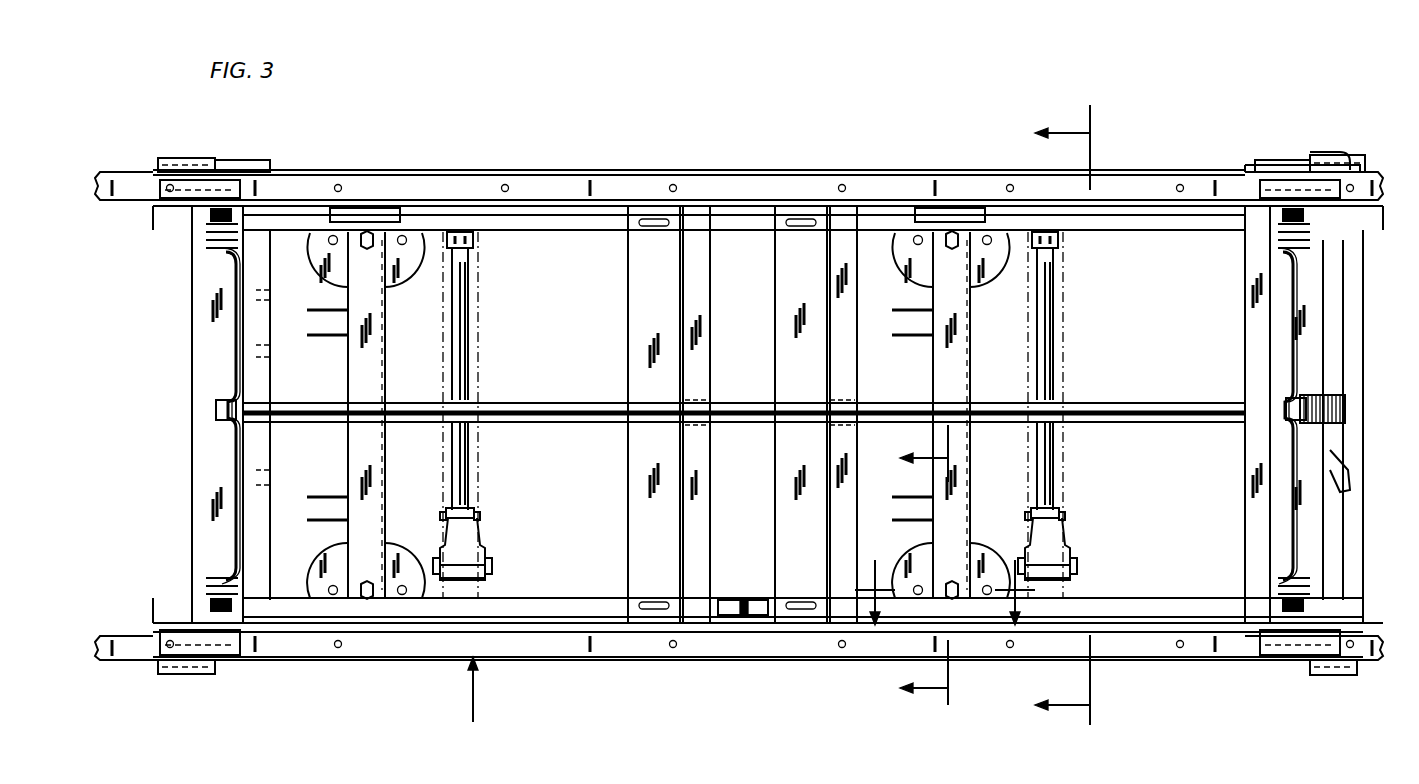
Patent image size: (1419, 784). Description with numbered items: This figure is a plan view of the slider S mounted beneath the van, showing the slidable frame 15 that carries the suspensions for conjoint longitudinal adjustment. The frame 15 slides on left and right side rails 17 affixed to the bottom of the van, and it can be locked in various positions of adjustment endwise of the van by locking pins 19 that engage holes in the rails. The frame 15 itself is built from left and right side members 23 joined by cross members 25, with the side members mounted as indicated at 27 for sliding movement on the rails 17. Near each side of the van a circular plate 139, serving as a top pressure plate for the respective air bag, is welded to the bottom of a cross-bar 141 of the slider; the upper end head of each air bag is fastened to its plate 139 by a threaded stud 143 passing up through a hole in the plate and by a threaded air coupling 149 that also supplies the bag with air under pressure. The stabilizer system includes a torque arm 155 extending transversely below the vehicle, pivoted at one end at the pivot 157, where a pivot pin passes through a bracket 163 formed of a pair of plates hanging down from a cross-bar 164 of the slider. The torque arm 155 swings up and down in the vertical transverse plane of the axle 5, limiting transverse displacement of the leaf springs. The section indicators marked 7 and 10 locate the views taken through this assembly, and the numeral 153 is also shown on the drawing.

The frame 15 is at (616, 635).
The side rail 17 is at (138, 174).
The locking pin 19 is at (222, 162).
The side member 23 is at (705, 170).
The cross member 25 is at (272, 455).
The sliding mount 27 is at (170, 160).
The circular plate 139 is at (330, 284).
The cross-bar 141 is at (388, 455).
The threaded stud 143 is at (328, 243).
The threaded air coupling 149 is at (402, 246).
The jack upper tube 153 is at (476, 338).
The torque arm 155 is at (468, 455).
The pivot 157 is at (488, 558).
The bracket 163 is at (438, 562).
The cross-bar 164 is at (478, 320).
The axle 5 is at (796, 422).
The section line 7 is at (918, 574).
The section line 10 is at (945, 569).